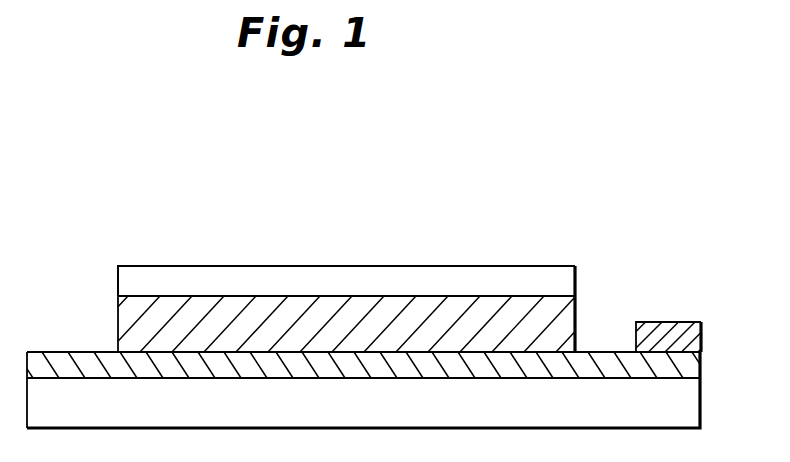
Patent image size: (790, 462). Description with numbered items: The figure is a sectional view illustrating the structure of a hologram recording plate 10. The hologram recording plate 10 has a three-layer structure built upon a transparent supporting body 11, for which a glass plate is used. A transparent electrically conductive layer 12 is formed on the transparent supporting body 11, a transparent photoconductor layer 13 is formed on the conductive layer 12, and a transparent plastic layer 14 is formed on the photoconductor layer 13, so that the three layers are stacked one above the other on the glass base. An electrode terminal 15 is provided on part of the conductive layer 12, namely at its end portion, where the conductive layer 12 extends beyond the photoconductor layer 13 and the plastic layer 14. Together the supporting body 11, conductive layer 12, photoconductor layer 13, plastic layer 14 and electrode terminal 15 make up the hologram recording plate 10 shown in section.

The hologram recording plate 10 is at (523, 250).
The transparent supporting body 11 is at (688, 404).
The transparent electrically conductive layer 12 is at (690, 367).
The transparent photoconductor layer 13 is at (563, 325).
The transparent plastic layer 14 is at (576, 275).
The electrode terminal 15 is at (683, 330).